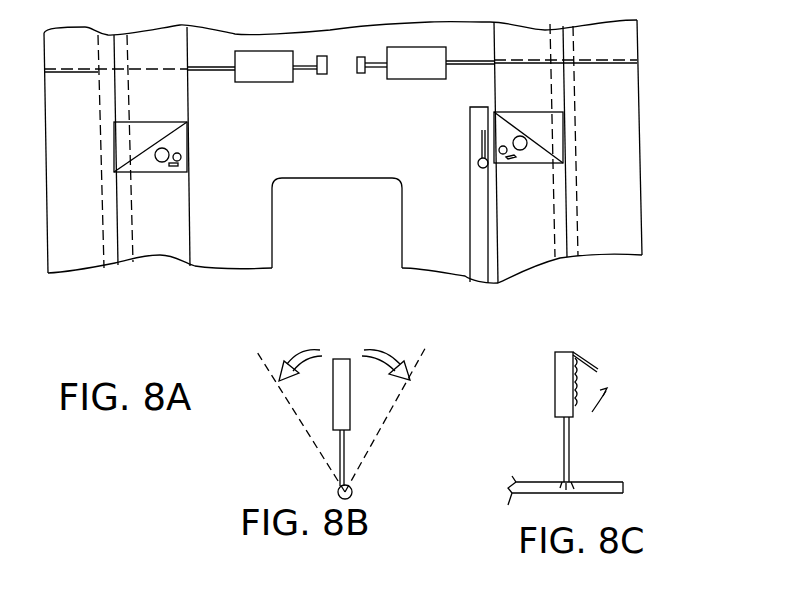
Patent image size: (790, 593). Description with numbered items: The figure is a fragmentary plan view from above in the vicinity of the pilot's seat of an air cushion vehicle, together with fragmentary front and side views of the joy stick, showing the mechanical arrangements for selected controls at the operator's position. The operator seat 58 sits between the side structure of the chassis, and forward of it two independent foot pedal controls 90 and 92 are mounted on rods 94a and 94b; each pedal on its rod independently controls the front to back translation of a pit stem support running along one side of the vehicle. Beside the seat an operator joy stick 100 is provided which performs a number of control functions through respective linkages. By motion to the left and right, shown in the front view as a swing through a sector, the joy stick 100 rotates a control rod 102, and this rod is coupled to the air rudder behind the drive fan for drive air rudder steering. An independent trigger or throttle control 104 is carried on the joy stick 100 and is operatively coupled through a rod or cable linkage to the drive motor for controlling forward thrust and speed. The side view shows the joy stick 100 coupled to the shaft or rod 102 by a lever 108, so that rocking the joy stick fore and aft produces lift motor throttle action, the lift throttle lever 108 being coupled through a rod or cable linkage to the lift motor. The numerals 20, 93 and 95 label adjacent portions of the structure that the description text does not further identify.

In FIG. 8A, the seat frame 20 is at (115, 36).
In FIG. 8A, the operator seat 58 is at (272, 222).
In FIG. 8A, the foot pedal control 90 is at (406, 47).
In FIG. 8A, the foot pedal control 92 is at (264, 51).
In FIG. 8A, the side rail 93 is at (568, 141).
In FIG. 8A, the rod 94a is at (313, 64).
In FIG. 8A, the rod 94b is at (371, 69).
In FIG. 8A, the side rail 95 is at (117, 136).
In FIG. 8A, the joy stick 100 is at (477, 165).
In FIG. 8B, the joy stick 100 is at (350, 388).
In FIG. 8C, the joy stick 100 is at (577, 411).
In FIG. 8A, the control rod 102 is at (470, 240).
In FIG. 8B, the control rod 102 is at (352, 490).
In FIG. 8C, the control rod 102 is at (525, 482).
In FIG. 8A, the throttle control 104 is at (478, 140).
In FIG. 8C, the throttle control 104 is at (599, 372).
In FIG. 8C, the lift throttle lever 108 is at (570, 482).